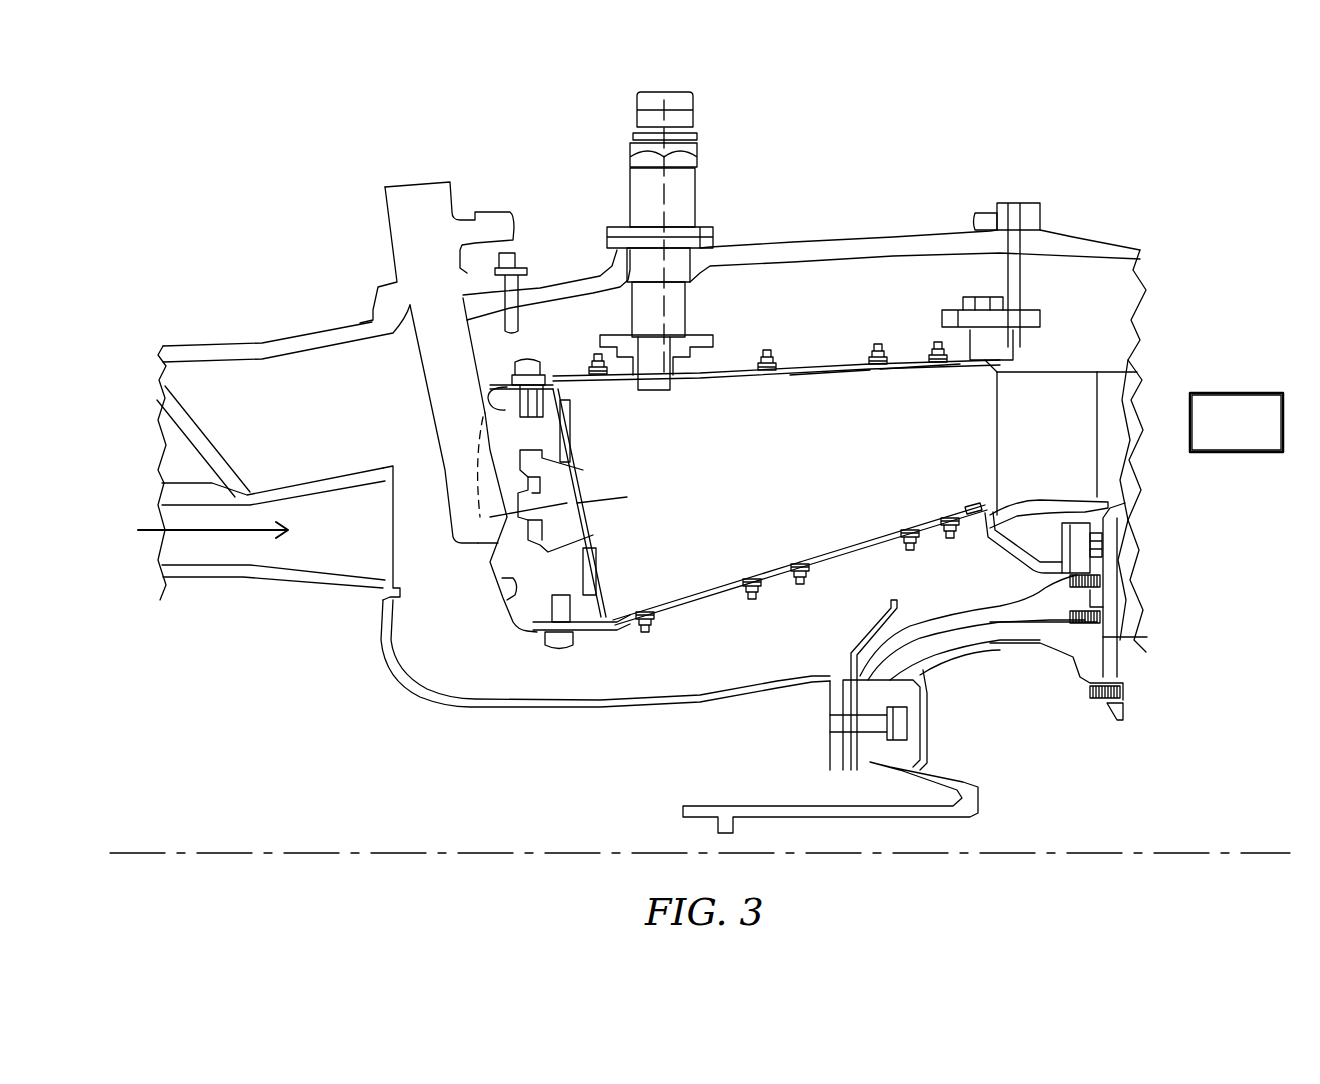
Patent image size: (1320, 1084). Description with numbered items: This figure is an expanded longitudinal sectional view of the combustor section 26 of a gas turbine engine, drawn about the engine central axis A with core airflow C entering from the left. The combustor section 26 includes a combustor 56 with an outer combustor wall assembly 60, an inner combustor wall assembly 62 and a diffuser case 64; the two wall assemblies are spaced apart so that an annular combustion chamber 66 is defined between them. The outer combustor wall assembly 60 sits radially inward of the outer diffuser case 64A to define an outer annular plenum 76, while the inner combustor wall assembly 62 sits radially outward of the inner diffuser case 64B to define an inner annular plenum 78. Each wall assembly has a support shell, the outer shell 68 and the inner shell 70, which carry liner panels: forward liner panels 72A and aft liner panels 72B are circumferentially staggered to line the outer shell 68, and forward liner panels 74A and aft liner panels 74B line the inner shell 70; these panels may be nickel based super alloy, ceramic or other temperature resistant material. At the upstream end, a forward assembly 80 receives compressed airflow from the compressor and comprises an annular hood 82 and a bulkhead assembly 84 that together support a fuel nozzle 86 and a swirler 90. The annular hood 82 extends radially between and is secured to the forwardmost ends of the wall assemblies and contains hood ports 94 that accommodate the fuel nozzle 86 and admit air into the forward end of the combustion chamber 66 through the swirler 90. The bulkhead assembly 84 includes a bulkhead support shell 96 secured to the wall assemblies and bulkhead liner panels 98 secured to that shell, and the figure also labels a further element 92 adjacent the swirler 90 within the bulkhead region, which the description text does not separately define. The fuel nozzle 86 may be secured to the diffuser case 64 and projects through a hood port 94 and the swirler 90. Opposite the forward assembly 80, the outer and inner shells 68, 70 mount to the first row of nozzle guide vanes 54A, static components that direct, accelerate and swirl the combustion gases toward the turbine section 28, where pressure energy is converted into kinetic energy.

The combustor section 26 is at (925, 145).
The turbine section 28 is at (1236, 422).
The Nozzle Guide Vanes (NGVs) 54A is at (1049, 450).
The combustor 56 is at (955, 290).
The outer combustor wall assembly 60 is at (829, 358).
The inner combustor wall assembly 62 is at (875, 555).
The diffuser case 64 is at (940, 228).
The outer diffuser case 64A is at (813, 243).
The inner diffuser case 64B is at (676, 712).
The annular combustion chamber 66 is at (880, 494).
The outer support shell 68 is at (907, 358).
The inner support shell 70 is at (837, 553).
The forward liner panels 72A is at (700, 385).
The aft liner panels 72B is at (872, 382).
The forward liner panels 74A is at (710, 570).
The aft liner panels 74B is at (870, 520).
The outer annular plenum 76 is at (687, 236).
The inner annular plenum 78 is at (610, 650).
The forward assembly 80 is at (497, 645).
The annular hood 82 is at (497, 605).
The bulkhead assembly 84 is at (585, 437).
The fuel nozzle 86 is at (443, 362).
The swirler 90 is at (595, 467).
The heat shield panel 92 is at (595, 537).
The hood ports 94 is at (490, 573).
The bulkhead support shell 96 is at (523, 622).
The bulkhead liner panels 98 is at (600, 566).
The engine central axis A is at (1254, 853).
The core airflow C is at (267, 500).